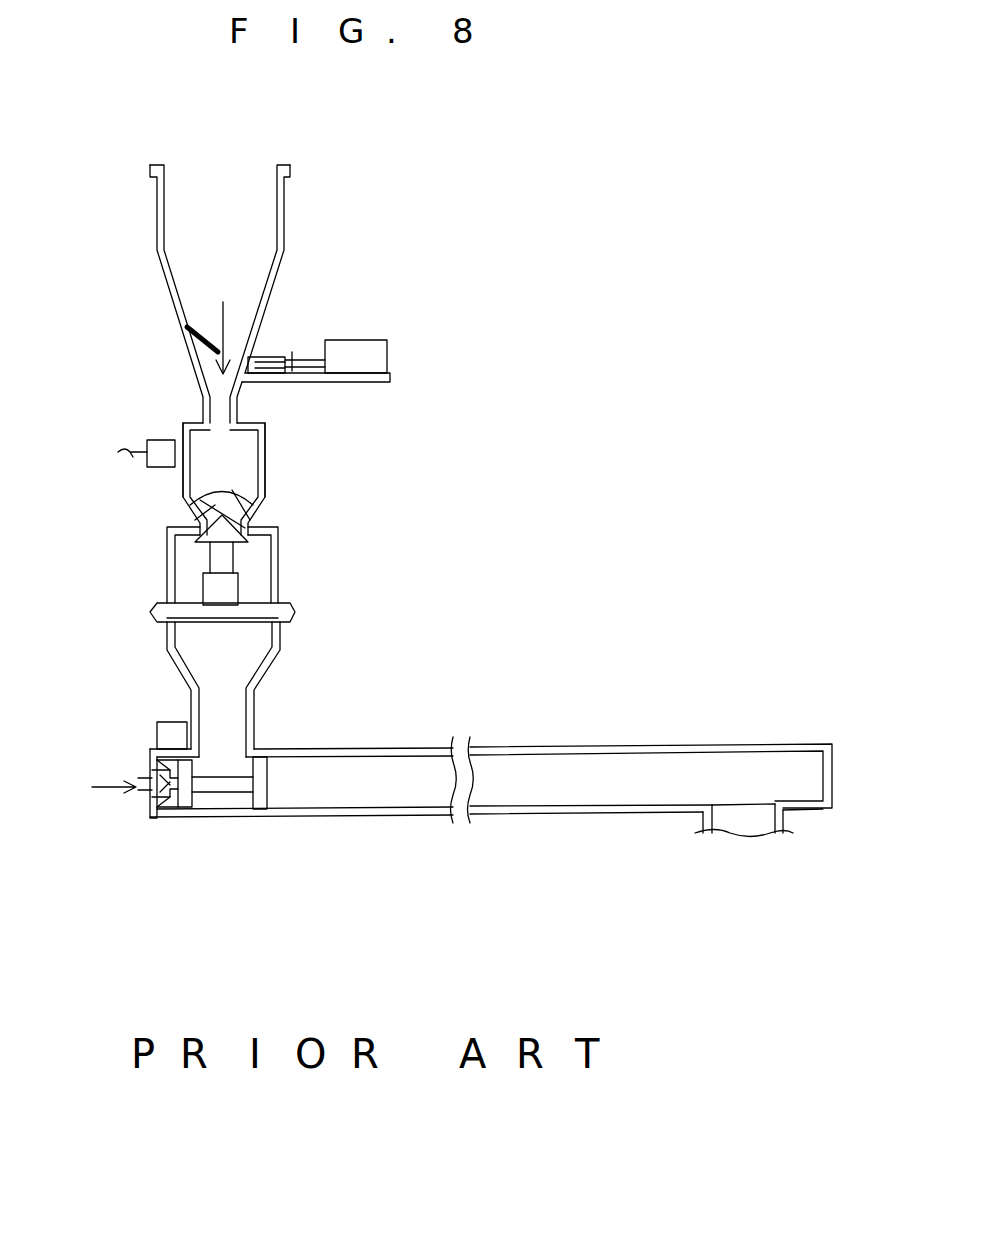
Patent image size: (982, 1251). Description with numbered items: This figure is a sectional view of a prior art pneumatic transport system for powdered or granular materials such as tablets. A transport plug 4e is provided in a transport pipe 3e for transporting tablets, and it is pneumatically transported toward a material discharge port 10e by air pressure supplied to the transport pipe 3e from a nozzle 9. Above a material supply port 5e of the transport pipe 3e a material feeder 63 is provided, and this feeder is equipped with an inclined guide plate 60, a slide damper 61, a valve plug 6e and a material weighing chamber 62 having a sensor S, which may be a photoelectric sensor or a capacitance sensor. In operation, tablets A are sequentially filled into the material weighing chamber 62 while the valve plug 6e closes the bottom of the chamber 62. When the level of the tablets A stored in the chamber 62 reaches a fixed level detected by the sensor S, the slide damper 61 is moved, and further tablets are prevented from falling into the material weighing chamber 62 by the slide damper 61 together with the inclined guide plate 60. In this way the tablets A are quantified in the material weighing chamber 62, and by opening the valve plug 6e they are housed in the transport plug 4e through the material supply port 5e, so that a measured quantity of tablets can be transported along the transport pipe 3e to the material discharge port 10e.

The inclined guide plate 60 is at (195, 325).
The slide damper 61 is at (297, 382).
The material weighing chamber 62 is at (243, 463).
The material feeder 63 is at (324, 497).
The valve plug 6e is at (247, 550).
The material supply port 5e is at (232, 757).
The transport plug 4e is at (262, 798).
The transport pipe 3e is at (502, 770).
The material discharge port 10e is at (755, 795).
The nozzle 9 is at (138, 781).
The sensor S is at (150, 440).
The tablets A is at (193, 510).